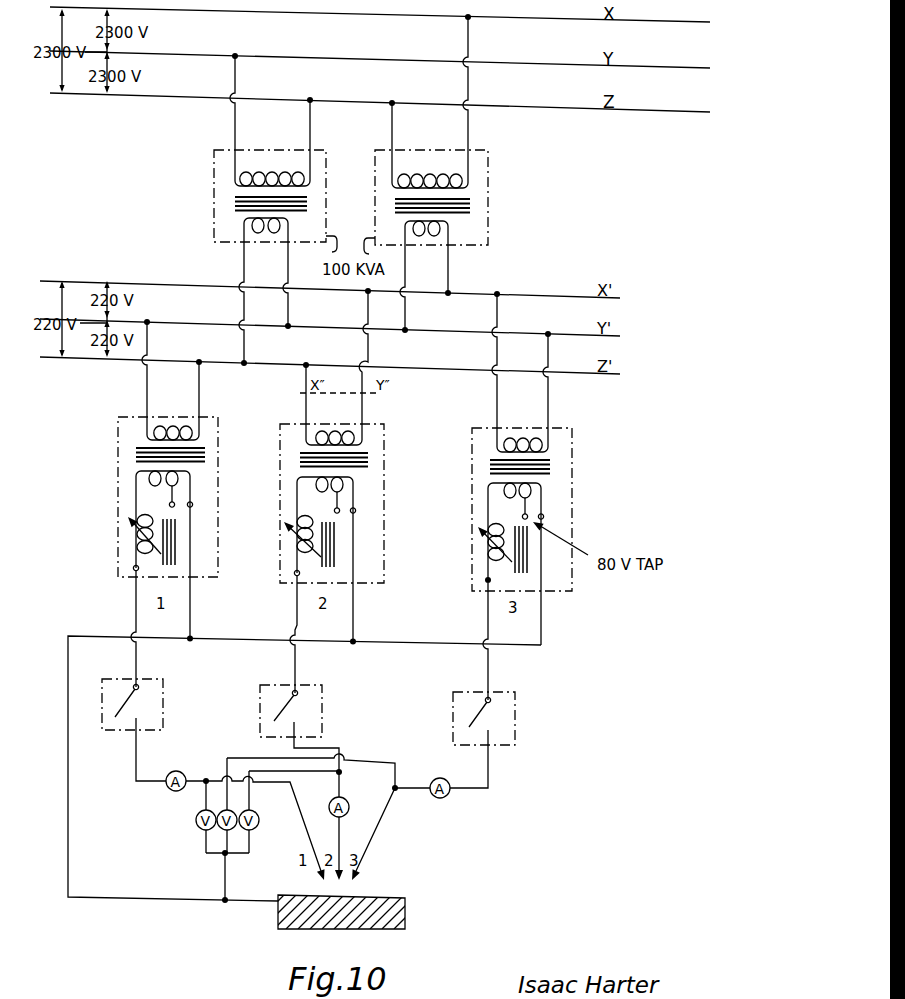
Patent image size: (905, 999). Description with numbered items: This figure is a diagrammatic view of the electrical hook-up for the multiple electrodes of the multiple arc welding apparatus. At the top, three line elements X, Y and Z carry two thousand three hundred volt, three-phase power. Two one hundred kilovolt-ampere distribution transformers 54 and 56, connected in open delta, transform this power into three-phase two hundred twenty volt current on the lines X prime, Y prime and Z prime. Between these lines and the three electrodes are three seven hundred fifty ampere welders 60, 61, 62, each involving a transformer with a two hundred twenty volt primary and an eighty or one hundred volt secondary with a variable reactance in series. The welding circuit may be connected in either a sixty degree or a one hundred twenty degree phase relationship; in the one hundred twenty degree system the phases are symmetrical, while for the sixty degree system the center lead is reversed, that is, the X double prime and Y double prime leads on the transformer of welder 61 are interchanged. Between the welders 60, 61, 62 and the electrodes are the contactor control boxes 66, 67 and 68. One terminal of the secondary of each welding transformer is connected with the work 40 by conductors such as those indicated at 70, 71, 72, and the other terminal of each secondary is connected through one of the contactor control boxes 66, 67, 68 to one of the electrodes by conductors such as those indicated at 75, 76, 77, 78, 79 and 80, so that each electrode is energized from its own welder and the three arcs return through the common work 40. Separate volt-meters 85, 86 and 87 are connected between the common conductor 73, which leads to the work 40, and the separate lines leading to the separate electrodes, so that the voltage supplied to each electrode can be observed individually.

The distribution transformer 54 is at (213, 187).
The distribution transformer 56 is at (485, 193).
The welder 60 is at (122, 450).
The welder 61 is at (284, 446).
The welder 62 is at (474, 450).
The contactor control box 66 is at (163, 702).
The contactor control box 67 is at (322, 706).
The contactor control box 68 is at (515, 708).
The conductor 70 is at (542, 622).
The conductor 71 is at (353, 612).
The conductor 72 is at (191, 612).
The conductor 73 is at (66, 764).
The conductor 75 is at (137, 657).
The conductor 76 is at (268, 785).
The conductor 77 is at (298, 624).
The conductor 78 is at (329, 750).
The conductor 79 is at (487, 625).
The conductor 80 is at (466, 790).
The volt-meter 85 is at (196, 818).
The volt-meter 86 is at (221, 831).
The volt-meter 87 is at (257, 830).
The work 40 is at (407, 912).